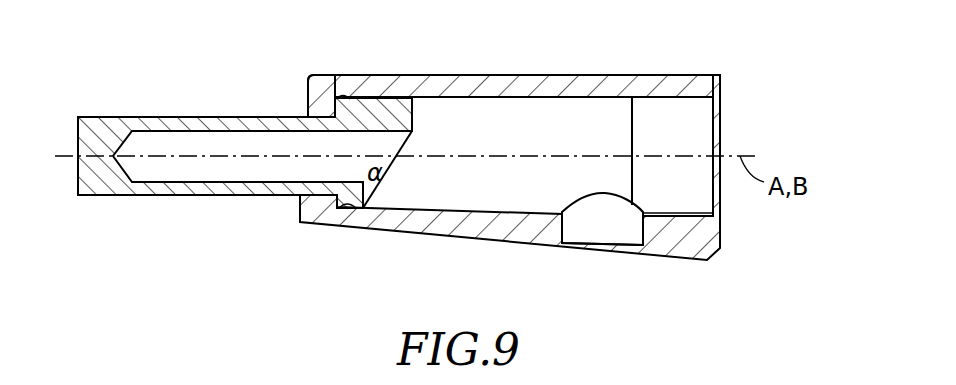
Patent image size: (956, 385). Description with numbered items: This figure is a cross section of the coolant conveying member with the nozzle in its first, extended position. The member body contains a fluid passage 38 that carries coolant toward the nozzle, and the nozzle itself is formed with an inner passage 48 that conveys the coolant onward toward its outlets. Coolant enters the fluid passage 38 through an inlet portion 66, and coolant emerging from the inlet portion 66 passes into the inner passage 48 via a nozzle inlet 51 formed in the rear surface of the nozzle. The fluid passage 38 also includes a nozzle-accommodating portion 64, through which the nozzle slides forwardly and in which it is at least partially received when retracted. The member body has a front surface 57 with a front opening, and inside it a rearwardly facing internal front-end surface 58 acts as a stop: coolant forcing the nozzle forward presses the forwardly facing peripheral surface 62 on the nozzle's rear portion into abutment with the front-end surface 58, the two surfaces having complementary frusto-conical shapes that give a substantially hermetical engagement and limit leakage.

The fluid passage 38 is at (539, 193).
The inner passage 48 is at (233, 167).
The nozzle inlet 51 is at (394, 193).
The front surface 57 is at (291, 100).
The rearwardly facing internal front-end surface 58 is at (367, 97).
The forwardly facing peripheral surface 62 is at (343, 97).
The nozzle-accommodating portion 64 is at (522, 135).
The inlet portion 66 is at (602, 215).